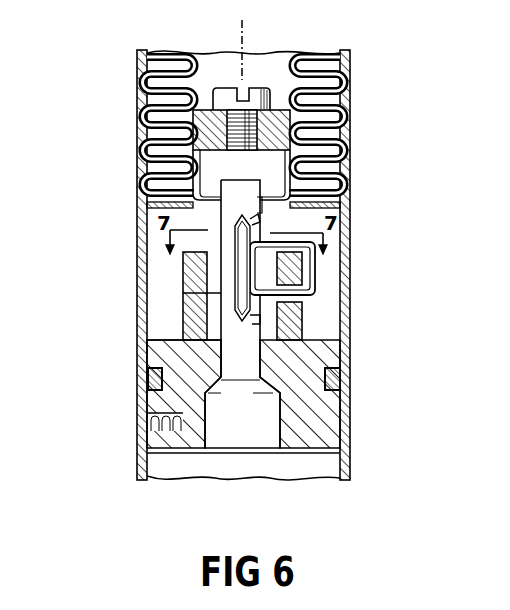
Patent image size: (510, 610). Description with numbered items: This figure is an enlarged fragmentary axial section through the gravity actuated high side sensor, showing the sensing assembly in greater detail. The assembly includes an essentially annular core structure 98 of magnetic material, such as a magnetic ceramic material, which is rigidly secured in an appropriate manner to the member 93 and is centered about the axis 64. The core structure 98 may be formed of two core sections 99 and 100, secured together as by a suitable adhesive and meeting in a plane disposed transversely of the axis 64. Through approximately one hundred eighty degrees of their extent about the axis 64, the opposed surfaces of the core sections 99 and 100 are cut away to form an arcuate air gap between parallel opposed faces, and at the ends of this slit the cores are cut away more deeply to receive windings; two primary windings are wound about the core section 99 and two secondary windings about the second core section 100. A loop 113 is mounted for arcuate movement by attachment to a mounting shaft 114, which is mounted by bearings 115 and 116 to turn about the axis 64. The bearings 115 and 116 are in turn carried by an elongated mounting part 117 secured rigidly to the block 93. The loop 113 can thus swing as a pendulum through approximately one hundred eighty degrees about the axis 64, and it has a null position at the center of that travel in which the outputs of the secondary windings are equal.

The axis 64 is at (245, 32).
The elongated mounting part 117 is at (262, 196).
The bearing 115 is at (260, 221).
The loop 113 is at (313, 267).
The mounting shaft 114 is at (250, 274).
The bearing 116 is at (300, 310).
The core section 99 is at (183, 273).
The annular core structure 98 is at (165, 293).
The core section 100 is at (183, 320).
The member 93 is at (140, 355).